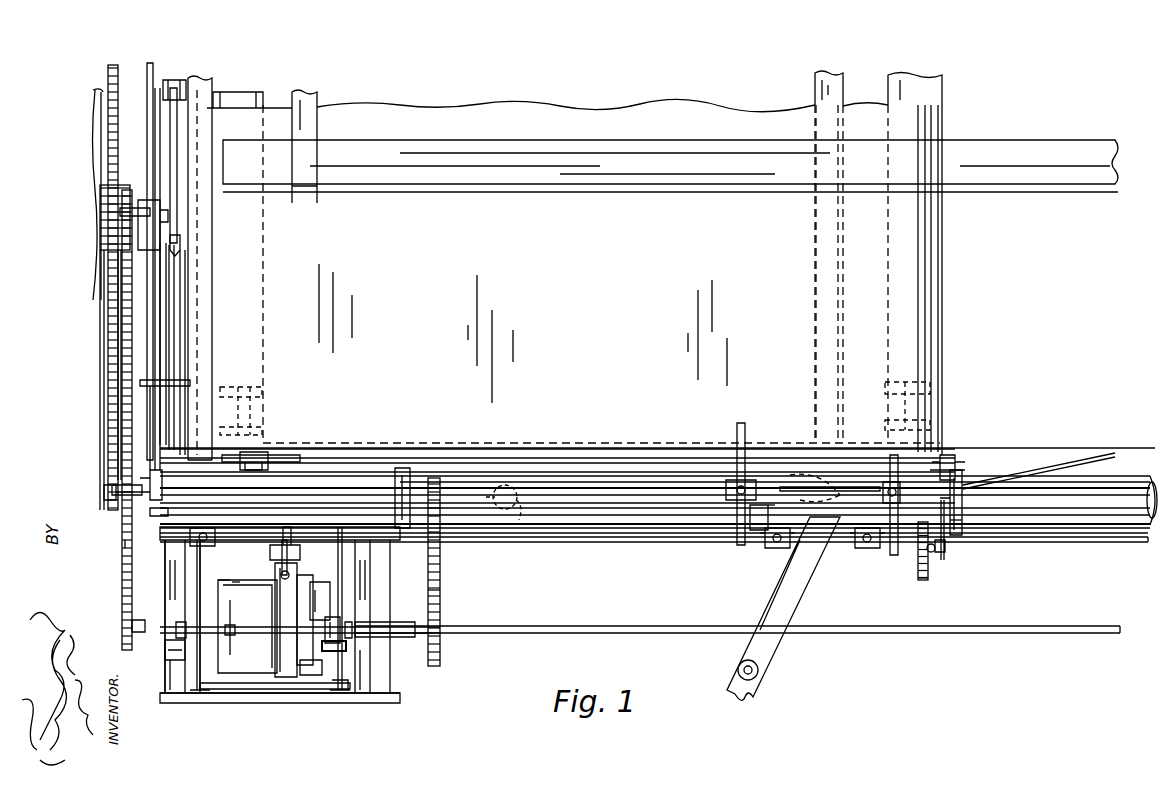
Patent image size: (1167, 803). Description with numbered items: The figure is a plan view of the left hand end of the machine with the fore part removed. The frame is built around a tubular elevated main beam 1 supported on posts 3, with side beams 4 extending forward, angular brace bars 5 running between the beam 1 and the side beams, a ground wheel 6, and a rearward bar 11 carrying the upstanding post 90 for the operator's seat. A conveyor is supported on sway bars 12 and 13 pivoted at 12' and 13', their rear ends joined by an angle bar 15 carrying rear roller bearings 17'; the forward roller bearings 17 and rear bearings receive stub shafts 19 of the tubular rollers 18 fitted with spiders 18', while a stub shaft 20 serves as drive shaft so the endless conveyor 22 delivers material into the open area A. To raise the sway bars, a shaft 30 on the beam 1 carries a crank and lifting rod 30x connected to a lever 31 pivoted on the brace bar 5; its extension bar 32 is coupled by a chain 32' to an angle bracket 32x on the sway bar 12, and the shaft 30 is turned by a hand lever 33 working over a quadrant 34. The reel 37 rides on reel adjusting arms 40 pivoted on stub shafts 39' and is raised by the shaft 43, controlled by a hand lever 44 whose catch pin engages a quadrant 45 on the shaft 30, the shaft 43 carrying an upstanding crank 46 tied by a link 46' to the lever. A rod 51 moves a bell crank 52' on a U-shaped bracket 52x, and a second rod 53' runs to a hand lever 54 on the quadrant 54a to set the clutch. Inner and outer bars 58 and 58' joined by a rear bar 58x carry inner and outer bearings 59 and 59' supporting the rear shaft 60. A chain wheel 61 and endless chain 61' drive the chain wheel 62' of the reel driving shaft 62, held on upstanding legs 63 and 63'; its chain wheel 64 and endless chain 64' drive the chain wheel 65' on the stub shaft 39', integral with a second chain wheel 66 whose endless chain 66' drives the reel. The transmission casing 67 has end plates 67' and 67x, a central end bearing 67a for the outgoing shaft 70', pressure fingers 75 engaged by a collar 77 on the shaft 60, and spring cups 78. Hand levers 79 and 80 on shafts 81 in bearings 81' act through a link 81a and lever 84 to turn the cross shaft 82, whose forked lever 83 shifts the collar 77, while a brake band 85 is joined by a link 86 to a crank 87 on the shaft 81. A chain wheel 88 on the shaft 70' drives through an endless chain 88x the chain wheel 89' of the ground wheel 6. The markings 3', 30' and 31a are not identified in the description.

The main elevated beam 1 is at (1128, 476).
The posts or uprights 3 is at (810, 460).
The drive connection 3' is at (514, 531).
The side beam 4 is at (167, 268).
The angular brace bar 5 is at (175, 312).
The ground wheel 6 is at (93, 104).
The bar 11 is at (796, 605).
The sway bar 12 is at (209, 256).
The pivotal connection 12' is at (271, 442).
The sway bar 13 is at (811, 257).
The pivotal connection 13' is at (830, 455).
The angle bar 15 is at (630, 458).
The forward roller bearing 17 is at (272, 447).
The rearward roller bearing 17' is at (963, 454).
The roller 18 is at (591, 257).
The spider 18' is at (966, 278).
The stub shaft 19 is at (935, 407).
The stub shaft 20 is at (262, 412).
The endless conveyor 22 is at (537, 112).
The shaft 30 is at (655, 475).
The rod end 30' is at (126, 516).
The lifting rod 30x is at (186, 358).
The lever 31 is at (155, 162).
The fork 31a is at (181, 243).
The forward extension bar 32 is at (150, 165).
The chain 32' is at (172, 65).
The angle bracket 32x is at (178, 82).
The actuating hand lever 33 is at (883, 495).
The quadrant 34 is at (893, 556).
The reel 37 is at (553, 186).
The stub shaft 39' is at (99, 211).
The reel adjusting arm 40 is at (150, 63).
The shaft 43 is at (566, 520).
The hand lever 44 is at (735, 501).
The quadrant 45 is at (737, 433).
The upstanding crank 46 is at (740, 540).
The link 46' is at (785, 502).
The rod 51 is at (1080, 464).
The bell crank 52' is at (974, 502).
The U-shaped bracket 52x is at (962, 522).
The second rod 53' is at (952, 532).
The hand lever 54 is at (920, 572).
The quadrant 54a is at (928, 580).
The inner bar 58 is at (281, 615).
The outer bar 58' is at (153, 616).
The rear bar 58x is at (270, 703).
The inner bearing 59 is at (300, 618).
The outer bearing 59' is at (162, 613).
The rear shaft 60 is at (878, 633).
The chain wheel 61 is at (450, 572).
The endless chain 61' is at (455, 575).
The reel driving shaft 62 is at (557, 460).
The chain wheel 62' is at (478, 461).
The upstanding leg 63 is at (112, 479).
The upstanding leg 63' is at (407, 475).
The chain wheel 64 is at (104, 492).
The endless chain 64' is at (85, 380).
The chain wheel 65' is at (109, 225).
The chain wheel 66 is at (92, 214).
The endless chain 66' is at (90, 284).
The casing 67 is at (269, 552).
The end plate 67' is at (223, 564).
The central end bearing 67a is at (239, 592).
The end plate 67x is at (330, 598).
The outgoing shaft 70' is at (157, 654).
The pressure finger 75 is at (330, 592).
The collar 77 is at (340, 626).
The thimble or cup 78 is at (318, 676).
The hand actuated lever 79 is at (776, 549).
The hand actuated lever 80 is at (868, 549).
The shaft 81 is at (654, 552).
The bearing 81' is at (176, 554).
The link 81a is at (200, 690).
The cross shaft 82 is at (343, 680).
The forked lever 83 is at (346, 646).
The lever 84 is at (292, 703).
The brake band 85 is at (276, 625).
The link 86 is at (286, 620).
The crank 87 is at (280, 588).
The chain wheel 88 is at (122, 636).
The endless chain 88x is at (125, 540).
The chain wheel 89' is at (89, 365).
The upstanding post 90 is at (738, 670).
The open area A is at (1050, 306).